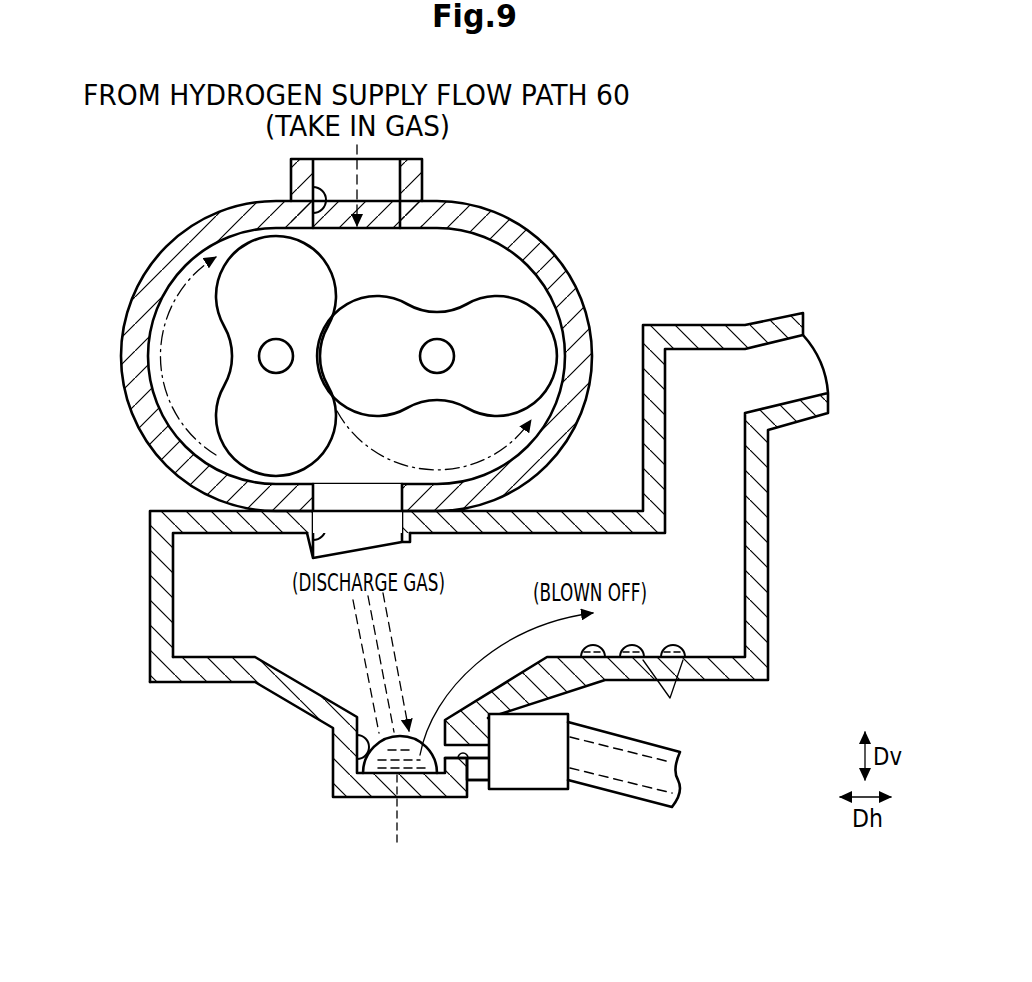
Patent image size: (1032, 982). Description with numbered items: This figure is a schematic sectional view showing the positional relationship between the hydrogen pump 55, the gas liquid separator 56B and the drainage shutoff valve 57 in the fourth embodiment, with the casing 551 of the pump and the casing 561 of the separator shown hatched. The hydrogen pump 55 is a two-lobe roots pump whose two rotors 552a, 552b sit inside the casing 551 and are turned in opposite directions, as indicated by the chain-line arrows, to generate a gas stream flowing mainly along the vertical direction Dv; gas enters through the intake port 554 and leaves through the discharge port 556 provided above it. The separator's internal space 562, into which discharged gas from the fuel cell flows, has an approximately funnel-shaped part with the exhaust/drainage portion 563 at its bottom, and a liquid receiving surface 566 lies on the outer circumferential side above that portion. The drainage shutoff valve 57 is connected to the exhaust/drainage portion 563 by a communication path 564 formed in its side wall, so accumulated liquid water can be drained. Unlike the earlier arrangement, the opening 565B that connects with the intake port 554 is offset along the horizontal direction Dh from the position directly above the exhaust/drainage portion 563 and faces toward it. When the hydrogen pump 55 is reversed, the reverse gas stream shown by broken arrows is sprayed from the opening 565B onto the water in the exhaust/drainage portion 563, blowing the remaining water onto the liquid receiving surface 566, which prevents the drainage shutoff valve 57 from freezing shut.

The hydrogen pump 55 is at (537, 232).
The casing 551 is at (181, 240).
The rotor 552a is at (217, 280).
The rotor 552b is at (537, 305).
The intake port 554 is at (325, 450).
The discharge port 556 is at (292, 188).
The gas liquid separator 56B is at (691, 324).
The casing 561 is at (768, 658).
The internal space 562 is at (228, 571).
The exhaust/drainage portion 563 is at (370, 731).
The communication path 564 is at (470, 762).
The opening 565B is at (309, 515).
The liquid receiving surface 566 is at (173, 647).
The drainage shutoff valve 57 is at (558, 791).